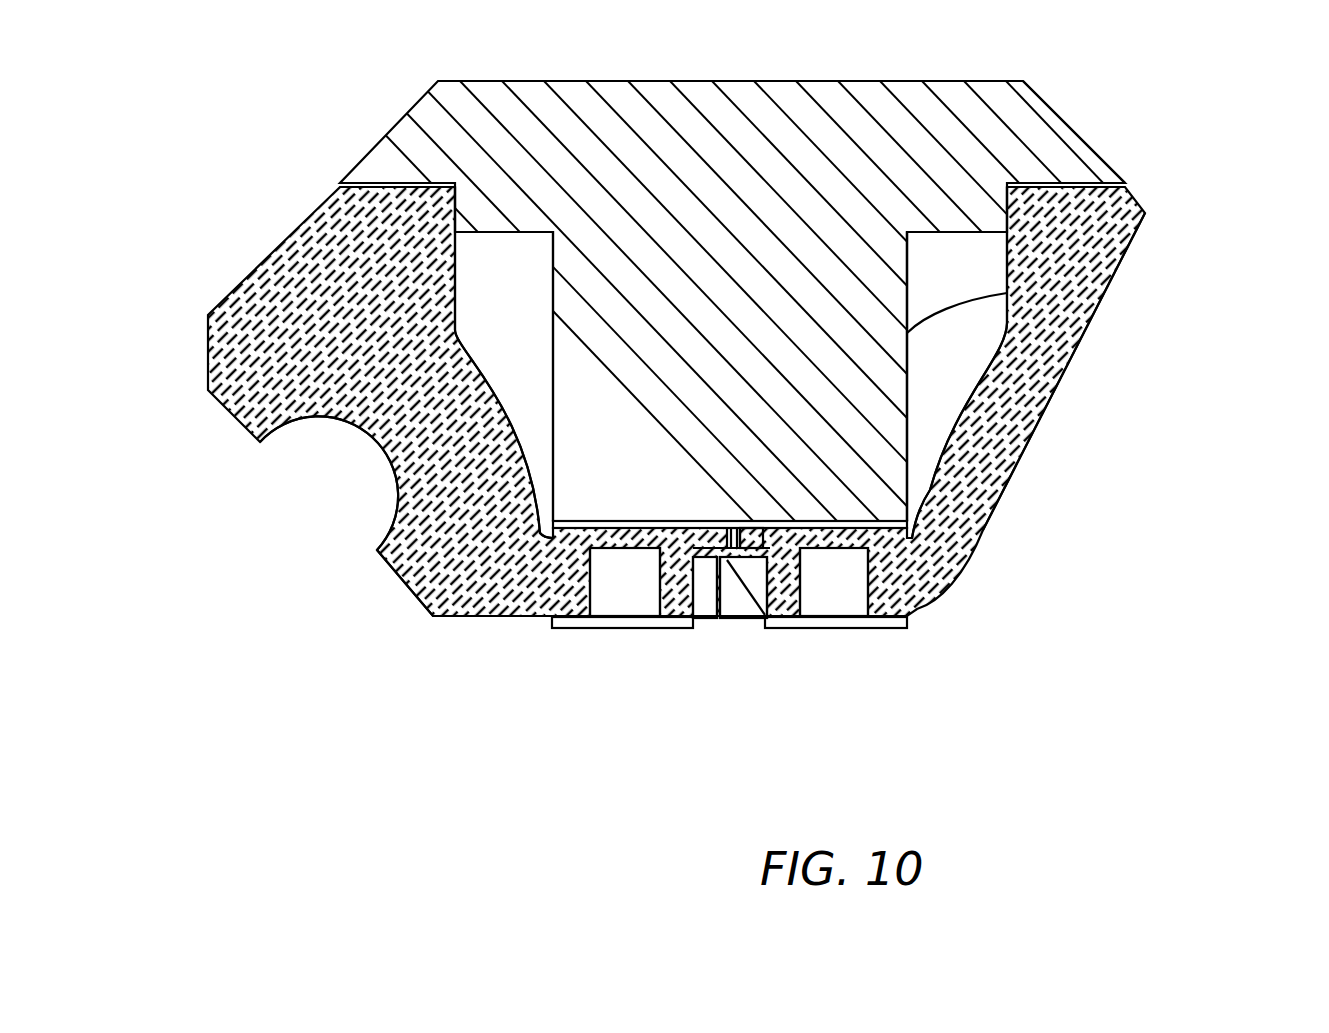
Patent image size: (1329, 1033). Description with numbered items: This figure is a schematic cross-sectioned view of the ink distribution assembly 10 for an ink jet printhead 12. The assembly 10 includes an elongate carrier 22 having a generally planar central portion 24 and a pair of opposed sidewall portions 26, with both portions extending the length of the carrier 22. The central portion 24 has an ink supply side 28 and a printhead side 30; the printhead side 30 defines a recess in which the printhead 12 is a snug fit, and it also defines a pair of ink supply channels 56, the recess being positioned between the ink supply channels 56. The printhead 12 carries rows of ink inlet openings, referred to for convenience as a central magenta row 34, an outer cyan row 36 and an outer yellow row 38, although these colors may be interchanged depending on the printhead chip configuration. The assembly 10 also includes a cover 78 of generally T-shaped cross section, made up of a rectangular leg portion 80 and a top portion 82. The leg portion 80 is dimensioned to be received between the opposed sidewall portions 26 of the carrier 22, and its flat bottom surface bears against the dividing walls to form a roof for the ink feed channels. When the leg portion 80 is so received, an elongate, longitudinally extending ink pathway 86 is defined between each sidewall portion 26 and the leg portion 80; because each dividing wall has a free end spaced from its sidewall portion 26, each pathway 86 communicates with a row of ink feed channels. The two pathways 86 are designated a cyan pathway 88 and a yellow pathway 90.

The ink distribution assembly 10 is at (1233, 153).
The ink jet printhead 12 is at (735, 620).
The carrier 22 is at (993, 528).
The central portion 24 is at (540, 618).
The sidewall portions 26 is at (330, 420).
The ink supply side 28 is at (870, 520).
The printhead side 30 is at (468, 617).
The central magenta row 34 is at (733, 558).
The outer cyan row 36 is at (707, 558).
The outer yellow row 38 is at (757, 560).
The ink supply channels 56 is at (623, 590).
The cover 78 is at (873, 82).
The leg portion 80 is at (1007, 293).
The top portion 82 is at (1052, 107).
The ink pathway 86 is at (480, 278).
The cyan pathway 88 is at (480, 312).
The yellow pathway 90 is at (917, 418).